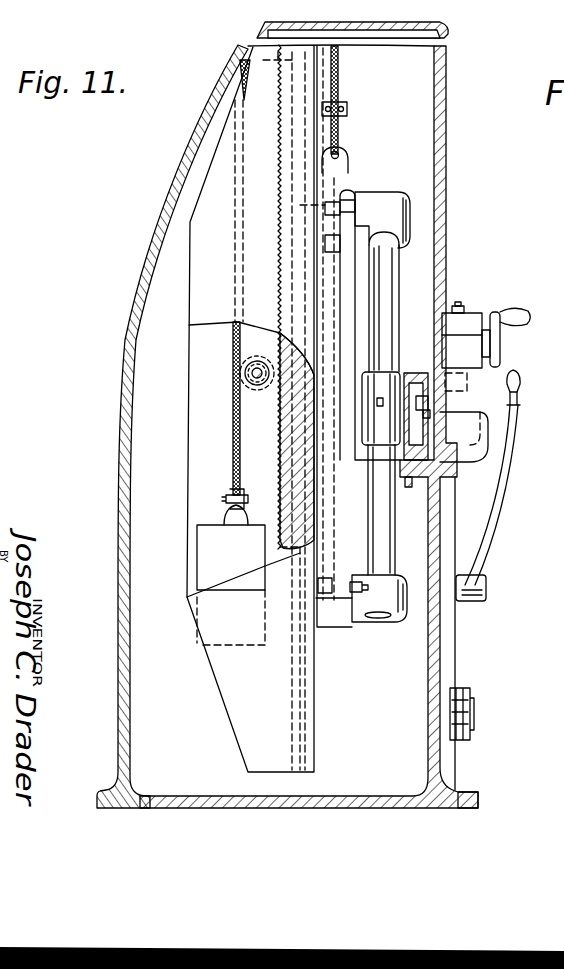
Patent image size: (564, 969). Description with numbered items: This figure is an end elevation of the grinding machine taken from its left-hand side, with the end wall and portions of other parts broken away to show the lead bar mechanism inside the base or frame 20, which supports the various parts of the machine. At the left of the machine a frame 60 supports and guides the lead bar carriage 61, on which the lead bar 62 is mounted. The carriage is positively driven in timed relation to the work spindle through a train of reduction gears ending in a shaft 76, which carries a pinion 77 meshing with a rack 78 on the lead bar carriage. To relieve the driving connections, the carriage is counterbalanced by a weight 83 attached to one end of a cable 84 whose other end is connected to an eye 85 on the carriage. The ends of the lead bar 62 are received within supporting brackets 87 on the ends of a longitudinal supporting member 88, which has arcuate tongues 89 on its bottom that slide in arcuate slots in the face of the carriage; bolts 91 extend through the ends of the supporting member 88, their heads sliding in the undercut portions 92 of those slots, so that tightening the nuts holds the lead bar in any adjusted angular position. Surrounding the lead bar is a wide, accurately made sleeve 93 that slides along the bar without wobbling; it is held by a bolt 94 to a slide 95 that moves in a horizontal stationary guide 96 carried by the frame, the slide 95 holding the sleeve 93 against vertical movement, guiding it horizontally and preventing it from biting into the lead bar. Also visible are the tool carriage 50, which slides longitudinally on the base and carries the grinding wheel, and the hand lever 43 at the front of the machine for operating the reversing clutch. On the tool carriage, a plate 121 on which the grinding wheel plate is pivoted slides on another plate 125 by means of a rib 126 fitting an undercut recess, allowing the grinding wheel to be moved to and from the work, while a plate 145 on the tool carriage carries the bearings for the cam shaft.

The base or frame 20 is at (120, 622).
The hand lever 43 is at (497, 531).
The tool carriage 50 is at (473, 405).
The frame 60 is at (312, 678).
The lead bar carriage 61 is at (326, 628).
The lead bar 62 is at (390, 285).
The shaft 76 is at (252, 373).
The pinion 77 is at (260, 357).
The rack 78 is at (280, 428).
The weight 83 is at (197, 545).
The cable 84 is at (233, 423).
The eye 85 is at (338, 150).
The supporting brackets 87 is at (388, 208).
The longitudinal supporting member 88 is at (350, 318).
The arcuate tongues 89 is at (280, 597).
The bolts 91 is at (366, 200).
The undercut portions 92 is at (325, 587).
The sleeve 93 is at (385, 372).
The bolt 94 is at (418, 392).
The slide 95 is at (390, 383).
The horizontal stationary guide 96 is at (407, 478).
The plate 121 is at (470, 330).
The plate 125 is at (472, 345).
The rib 126 is at (500, 314).
The plate 145 is at (472, 362).